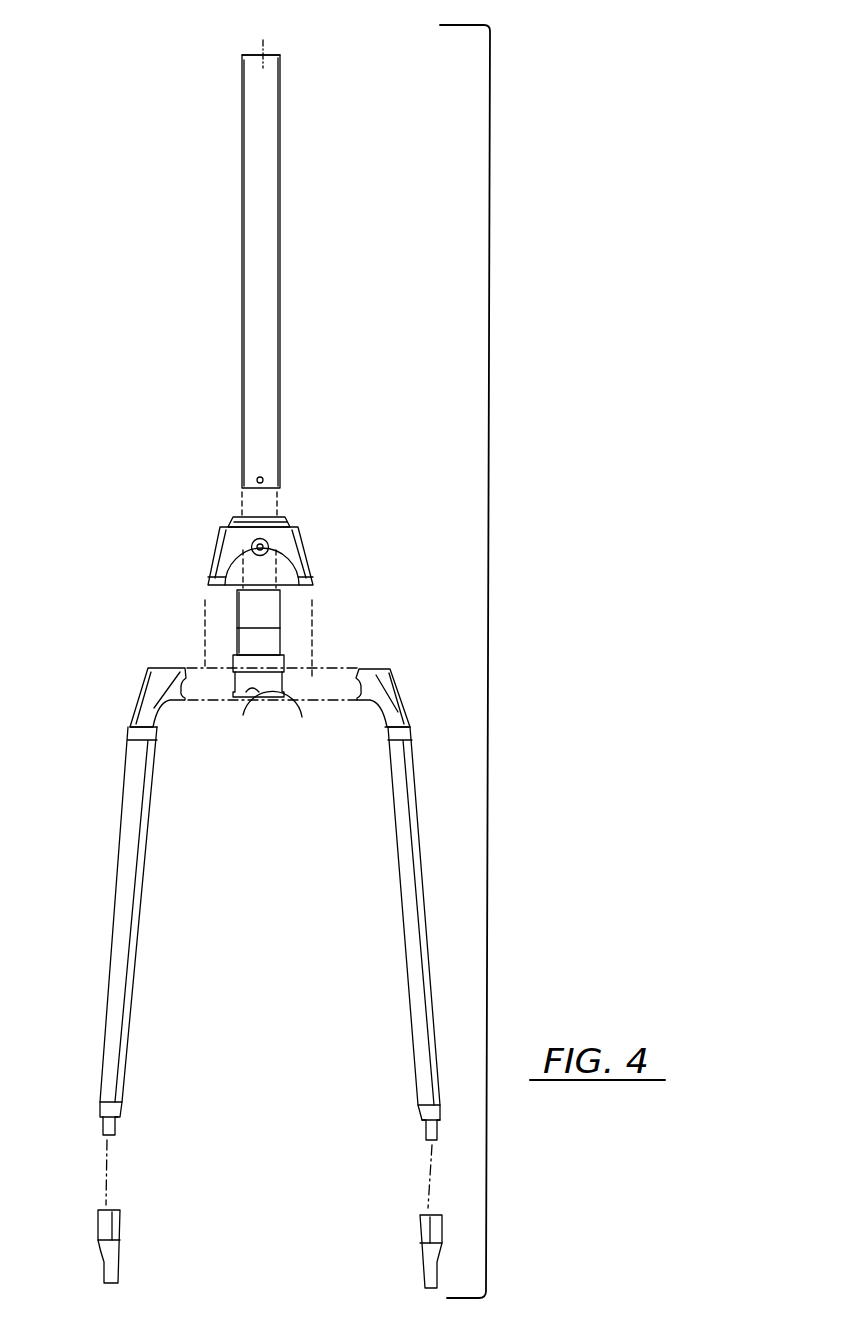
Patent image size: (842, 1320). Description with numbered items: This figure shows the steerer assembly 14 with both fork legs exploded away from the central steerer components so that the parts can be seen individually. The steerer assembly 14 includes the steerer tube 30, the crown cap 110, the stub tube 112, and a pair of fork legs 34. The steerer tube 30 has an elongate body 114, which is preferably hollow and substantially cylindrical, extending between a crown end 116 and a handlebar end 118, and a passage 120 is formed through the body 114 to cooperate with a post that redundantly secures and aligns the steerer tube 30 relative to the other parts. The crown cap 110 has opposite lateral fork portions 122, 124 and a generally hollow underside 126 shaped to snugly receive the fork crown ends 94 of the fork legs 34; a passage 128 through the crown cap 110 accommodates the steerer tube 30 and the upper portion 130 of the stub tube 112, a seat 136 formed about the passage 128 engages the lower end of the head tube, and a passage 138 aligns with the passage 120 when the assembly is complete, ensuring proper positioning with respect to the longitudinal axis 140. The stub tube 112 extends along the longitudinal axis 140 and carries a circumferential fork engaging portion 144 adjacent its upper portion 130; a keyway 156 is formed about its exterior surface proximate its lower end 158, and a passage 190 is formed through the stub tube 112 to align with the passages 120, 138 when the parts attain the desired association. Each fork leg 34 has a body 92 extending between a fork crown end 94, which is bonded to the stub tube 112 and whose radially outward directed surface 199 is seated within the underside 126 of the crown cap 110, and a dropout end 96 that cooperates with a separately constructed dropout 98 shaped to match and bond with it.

The steerer assembly 14 is at (488, 522).
The steerer tube 30 is at (283, 232).
The fork leg 34 is at (259, 963).
The body 92 is at (137, 890).
The fork crown end 94 is at (127, 672).
The dropout end 96 is at (135, 1112).
The dropout 98 is at (113, 1252).
The crown cap 110 is at (298, 540).
The stub tube 112 is at (280, 633).
The elongate body 114 is at (268, 298).
The crown end 116 is at (405, 432).
The handlebar end 118 is at (300, 82).
The passage 120 is at (256, 479).
The fork portion 122 is at (210, 568).
The fork portion 124 is at (308, 572).
The underside 126 is at (211, 594).
The passage 128 is at (287, 518).
The upper portion 130 is at (300, 636).
The seat 136 is at (232, 520).
The passage 138 is at (252, 547).
The longitudinal axis 140 is at (263, 3).
The fork engaging portion 144 is at (229, 691).
The keyway 156 is at (286, 717).
The lower end 158 is at (327, 706).
The passage 190 is at (258, 694).
The radially outward directed surface 199 is at (140, 688).